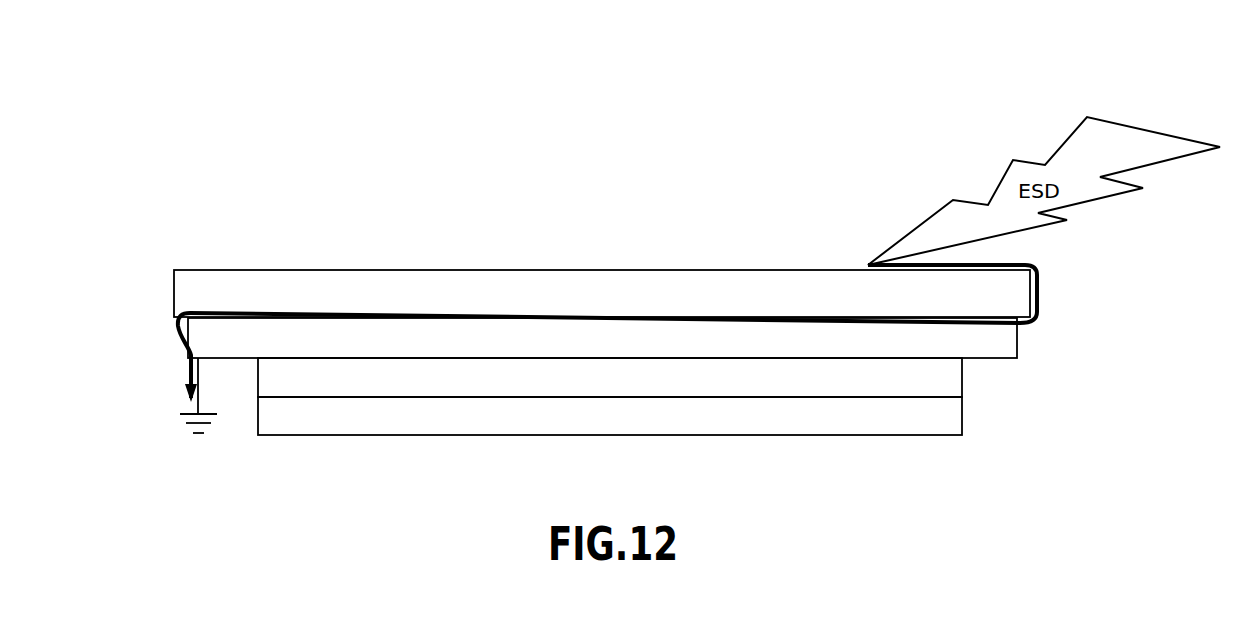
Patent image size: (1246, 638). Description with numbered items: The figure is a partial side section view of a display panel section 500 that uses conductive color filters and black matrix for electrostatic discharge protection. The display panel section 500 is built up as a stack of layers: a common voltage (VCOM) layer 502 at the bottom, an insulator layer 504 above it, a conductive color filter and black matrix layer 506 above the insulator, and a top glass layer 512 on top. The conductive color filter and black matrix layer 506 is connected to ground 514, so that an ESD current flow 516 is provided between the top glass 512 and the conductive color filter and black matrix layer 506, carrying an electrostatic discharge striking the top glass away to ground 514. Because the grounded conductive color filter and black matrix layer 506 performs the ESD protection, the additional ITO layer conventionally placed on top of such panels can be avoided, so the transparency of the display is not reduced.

The display panel section 500 is at (317, 62).
The common voltage (VCOM) layer 502 is at (964, 420).
The insulator layer 504 is at (964, 375).
The conductive color filter and black matrix layer 506 is at (1019, 339).
The top glass layer 512 is at (222, 270).
The ground 514 is at (212, 408).
The ESD current flow 516 is at (180, 328).